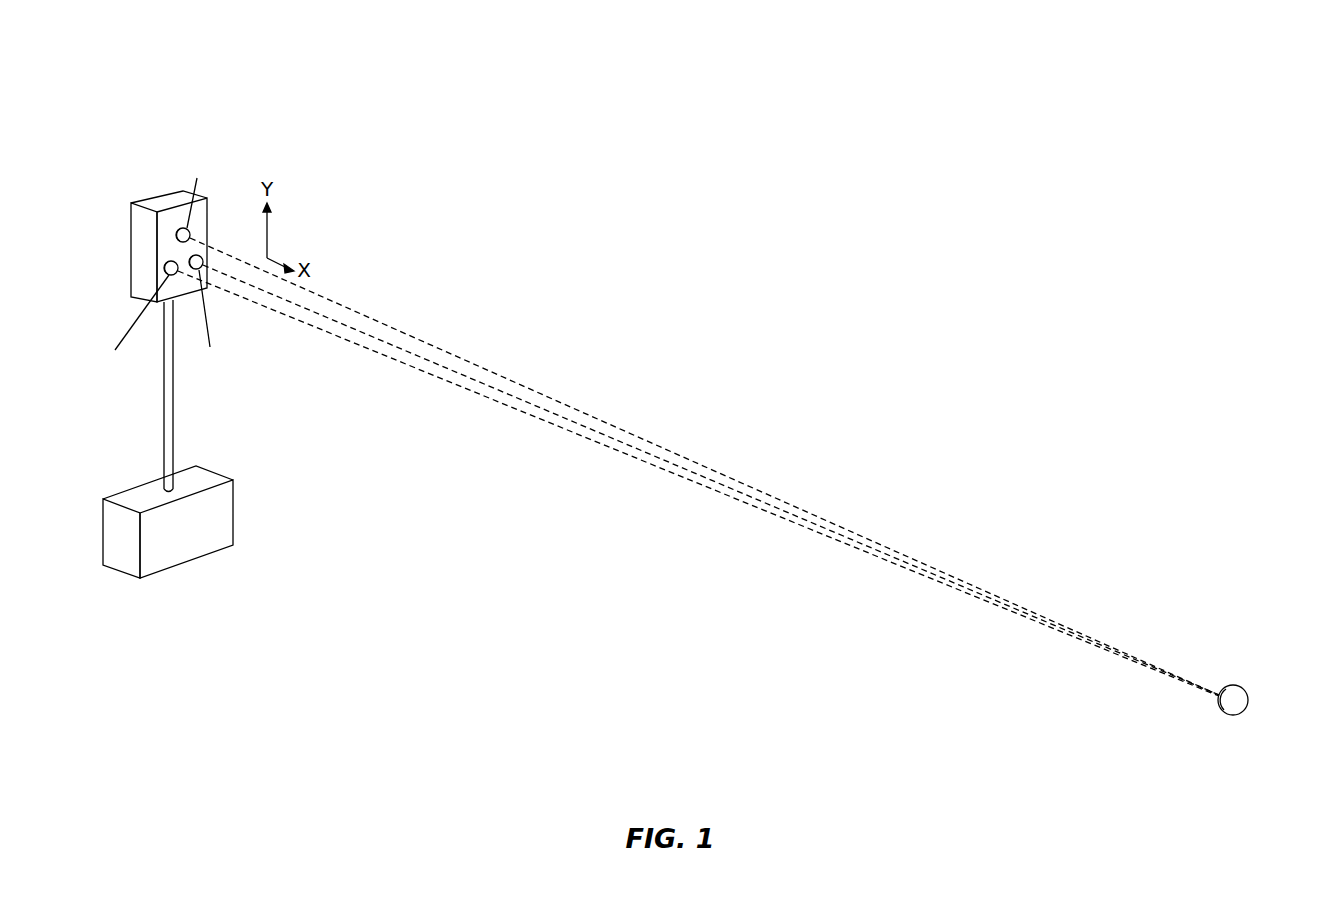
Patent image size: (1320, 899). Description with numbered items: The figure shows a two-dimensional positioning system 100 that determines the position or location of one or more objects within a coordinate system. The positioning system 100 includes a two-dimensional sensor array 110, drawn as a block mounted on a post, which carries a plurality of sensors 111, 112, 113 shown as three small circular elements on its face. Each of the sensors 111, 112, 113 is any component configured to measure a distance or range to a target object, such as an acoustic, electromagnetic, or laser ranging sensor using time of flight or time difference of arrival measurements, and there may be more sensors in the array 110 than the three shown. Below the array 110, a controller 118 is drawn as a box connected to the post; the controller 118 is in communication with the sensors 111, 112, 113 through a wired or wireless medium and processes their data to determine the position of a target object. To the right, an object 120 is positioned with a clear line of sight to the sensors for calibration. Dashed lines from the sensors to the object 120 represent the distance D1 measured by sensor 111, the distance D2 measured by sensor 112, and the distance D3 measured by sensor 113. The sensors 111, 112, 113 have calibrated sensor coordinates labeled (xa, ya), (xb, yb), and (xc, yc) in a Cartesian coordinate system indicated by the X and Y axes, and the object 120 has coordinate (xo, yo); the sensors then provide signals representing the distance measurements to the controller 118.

The positioning system 100 is at (427, 194).
The 2D sensor array 110 is at (158, 199).
The sensor 111 is at (176, 235).
The sensor 112 is at (202, 257).
The sensor 113 is at (164, 268).
The controller 118 is at (190, 545).
The object 120 is at (1241, 688).
The distance D1 is at (578, 410).
The distance D2 is at (527, 400).
The distance D3 is at (577, 433).